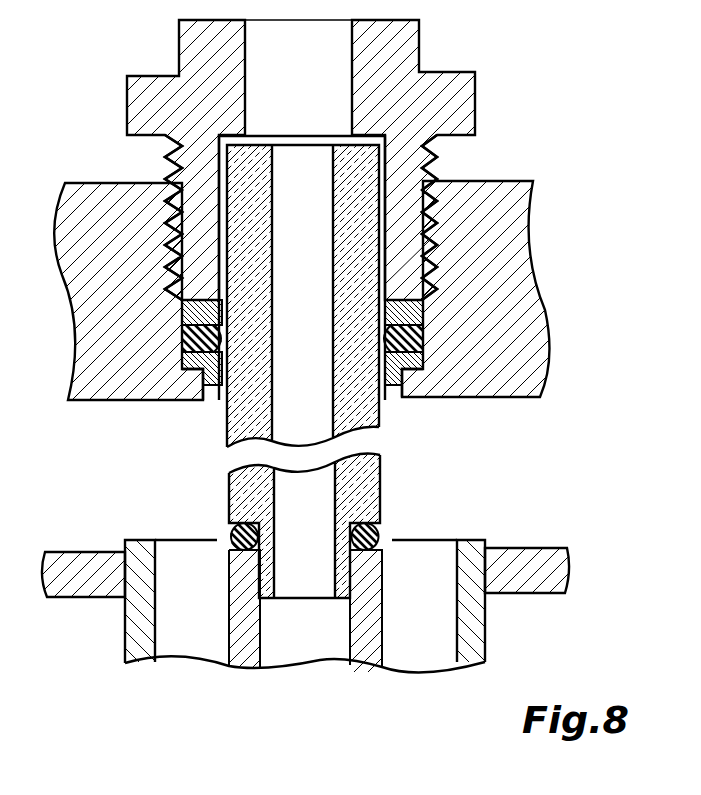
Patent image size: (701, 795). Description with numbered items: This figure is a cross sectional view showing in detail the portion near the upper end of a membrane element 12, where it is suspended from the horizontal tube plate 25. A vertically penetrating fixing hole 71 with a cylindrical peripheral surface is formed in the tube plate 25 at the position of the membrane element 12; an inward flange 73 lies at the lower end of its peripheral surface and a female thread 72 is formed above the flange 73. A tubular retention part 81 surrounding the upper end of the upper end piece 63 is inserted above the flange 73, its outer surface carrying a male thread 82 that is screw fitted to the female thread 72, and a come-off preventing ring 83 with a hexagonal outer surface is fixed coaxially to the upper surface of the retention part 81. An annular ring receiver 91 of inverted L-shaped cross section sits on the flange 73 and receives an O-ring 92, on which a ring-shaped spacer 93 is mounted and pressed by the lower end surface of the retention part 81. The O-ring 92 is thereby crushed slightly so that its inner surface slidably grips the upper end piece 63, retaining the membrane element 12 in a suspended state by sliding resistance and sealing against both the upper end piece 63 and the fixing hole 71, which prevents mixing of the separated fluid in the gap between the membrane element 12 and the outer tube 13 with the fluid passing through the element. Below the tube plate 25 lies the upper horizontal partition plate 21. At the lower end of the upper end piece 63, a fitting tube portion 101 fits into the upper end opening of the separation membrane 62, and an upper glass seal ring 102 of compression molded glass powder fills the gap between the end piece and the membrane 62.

The tubular retention part 81 is at (463, 105).
The come-off preventing ring 83 is at (187, 46).
The male thread 82 is at (170, 162).
The female thread 72 is at (180, 250).
The tube plate 25 is at (515, 242).
The inward flange 73 is at (204, 401).
The ring-shaped spacer 93 is at (425, 310).
The O-ring 92 is at (422, 347).
The fixing hole 71 is at (182, 368).
The annular ring receiver 91 is at (388, 398).
The upper end piece 63 is at (367, 488).
The upper glass seal ring 102 is at (230, 535).
The fitting tube portion 101 is at (265, 580).
The separation membrane 62 is at (370, 630).
The outer tube 13 is at (485, 630).
The upper horizontal partition plate 21 is at (565, 570).
The membrane element 12 is at (388, 684).